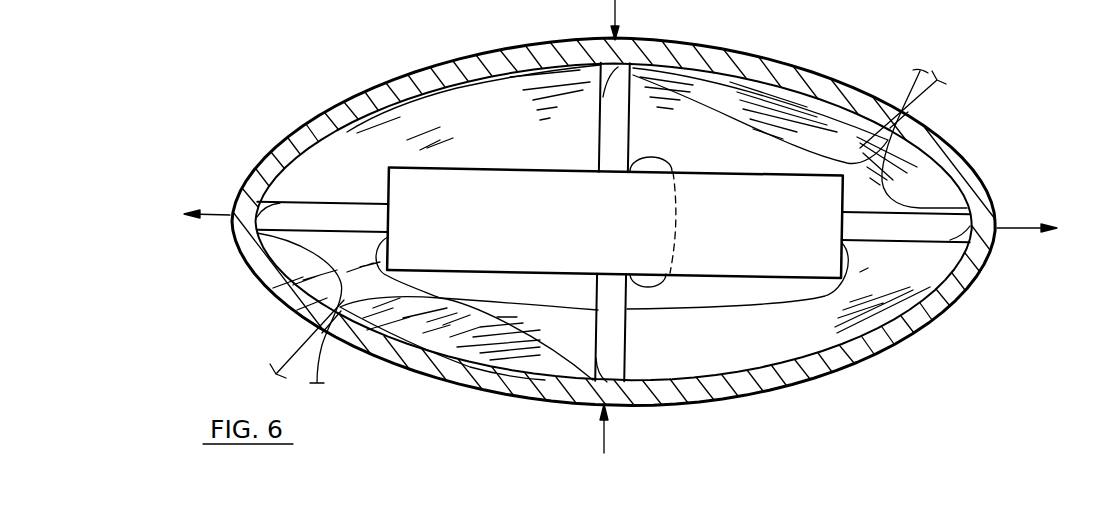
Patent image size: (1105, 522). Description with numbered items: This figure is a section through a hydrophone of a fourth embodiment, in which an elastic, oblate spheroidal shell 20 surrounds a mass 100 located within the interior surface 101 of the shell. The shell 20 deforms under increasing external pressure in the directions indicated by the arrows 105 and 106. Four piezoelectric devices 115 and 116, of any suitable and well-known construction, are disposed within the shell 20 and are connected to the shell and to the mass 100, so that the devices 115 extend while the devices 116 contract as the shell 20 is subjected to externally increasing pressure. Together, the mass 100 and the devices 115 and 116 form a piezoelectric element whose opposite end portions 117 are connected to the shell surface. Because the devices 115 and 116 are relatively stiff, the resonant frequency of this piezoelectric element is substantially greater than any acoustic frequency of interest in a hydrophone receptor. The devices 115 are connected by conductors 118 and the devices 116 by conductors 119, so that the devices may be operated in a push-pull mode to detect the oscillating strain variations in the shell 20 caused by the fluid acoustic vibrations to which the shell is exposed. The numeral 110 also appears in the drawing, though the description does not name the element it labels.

The shell 20 is at (794, 46).
The mass 100 is at (727, 200).
The interior surface 101 is at (526, 74).
The arrows 105 is at (213, 218).
The arrows 106 is at (618, 13).
The lower support bar 110 is at (618, 348).
The piezoelectric devices 115 is at (338, 210).
The piezoelectric devices 116 is at (615, 128).
The end portions 117 is at (603, 96).
The conductors 118 is at (276, 372).
The conductors 119 is at (915, 71).